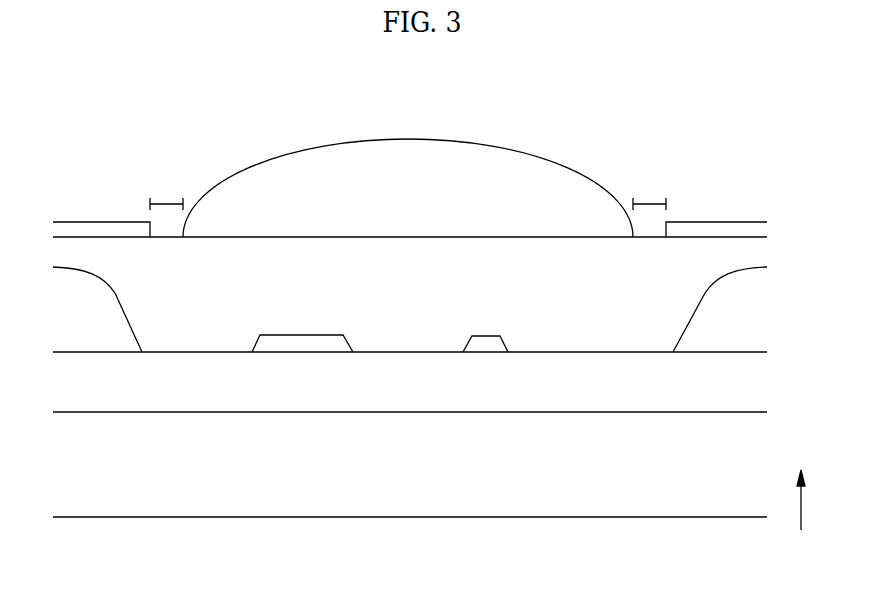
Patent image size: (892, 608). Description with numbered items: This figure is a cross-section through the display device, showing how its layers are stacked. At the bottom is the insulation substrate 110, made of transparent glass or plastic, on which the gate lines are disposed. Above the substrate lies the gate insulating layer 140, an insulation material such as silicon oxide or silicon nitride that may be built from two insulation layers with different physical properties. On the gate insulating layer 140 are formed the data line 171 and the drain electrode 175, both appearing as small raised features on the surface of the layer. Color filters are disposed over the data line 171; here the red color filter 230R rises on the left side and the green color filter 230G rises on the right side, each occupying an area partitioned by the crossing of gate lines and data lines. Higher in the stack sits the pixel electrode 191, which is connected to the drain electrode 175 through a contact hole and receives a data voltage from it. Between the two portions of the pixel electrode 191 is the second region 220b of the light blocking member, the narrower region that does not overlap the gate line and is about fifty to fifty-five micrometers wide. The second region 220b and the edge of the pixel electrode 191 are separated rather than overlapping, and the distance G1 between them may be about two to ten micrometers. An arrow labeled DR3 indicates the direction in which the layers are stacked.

The insulation substrate 110 is at (592, 508).
The gate insulating layer 140 is at (393, 397).
The data line 171 is at (305, 345).
The drain electrode 175 is at (486, 347).
The pixel electrode 191 is at (79, 225).
The second region of light blocking member 220b is at (411, 152).
The red color filter 230R is at (95, 339).
The green color filter 230G is at (727, 343).
The distance G1 is at (408, 190).
The third direction DR3 is at (801, 515).